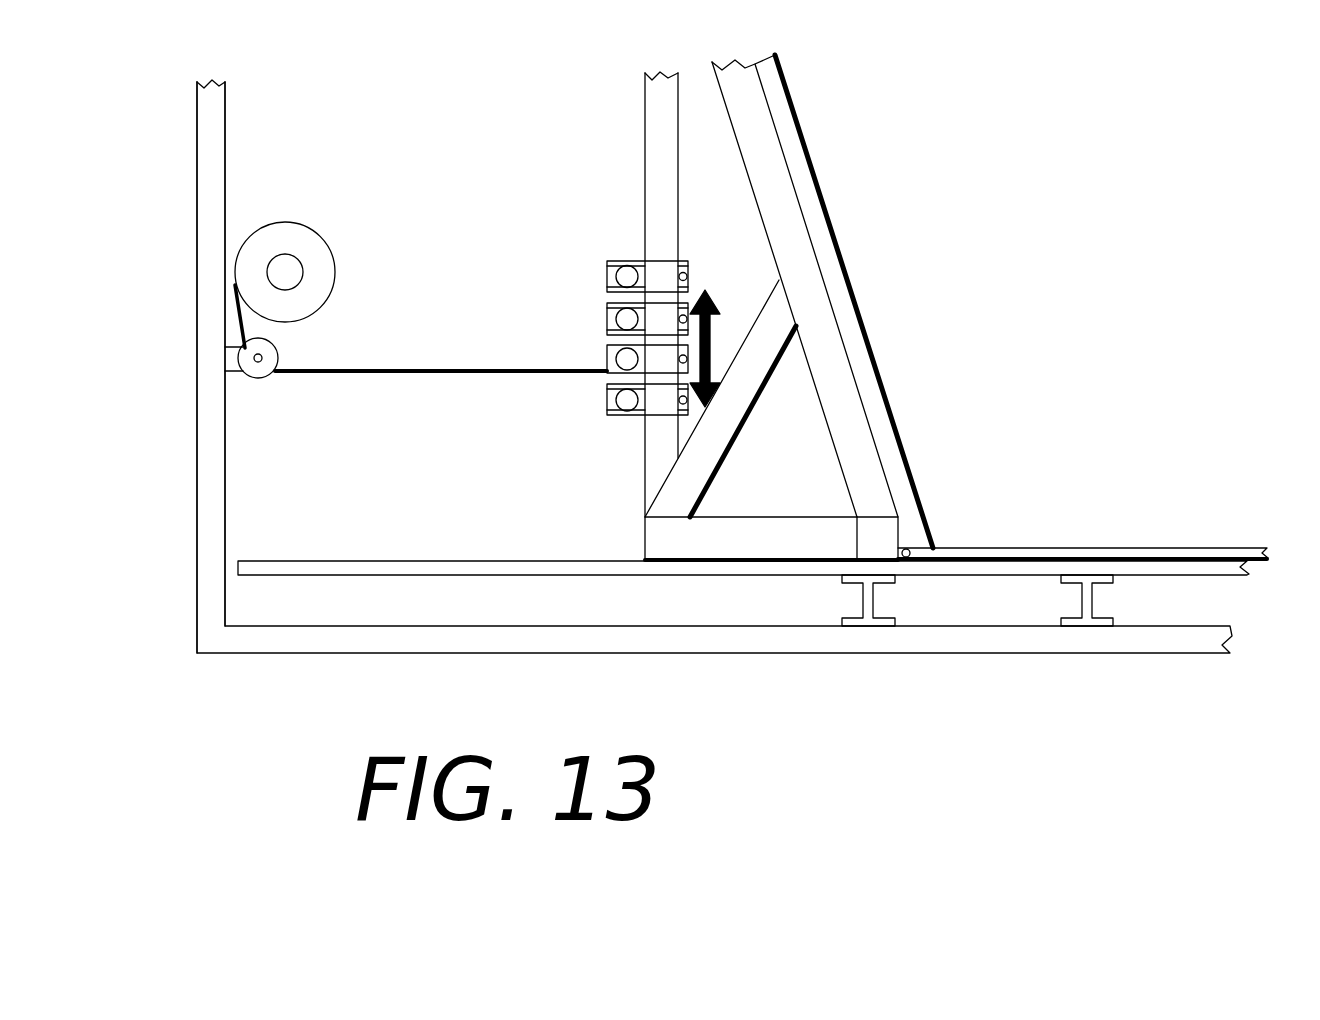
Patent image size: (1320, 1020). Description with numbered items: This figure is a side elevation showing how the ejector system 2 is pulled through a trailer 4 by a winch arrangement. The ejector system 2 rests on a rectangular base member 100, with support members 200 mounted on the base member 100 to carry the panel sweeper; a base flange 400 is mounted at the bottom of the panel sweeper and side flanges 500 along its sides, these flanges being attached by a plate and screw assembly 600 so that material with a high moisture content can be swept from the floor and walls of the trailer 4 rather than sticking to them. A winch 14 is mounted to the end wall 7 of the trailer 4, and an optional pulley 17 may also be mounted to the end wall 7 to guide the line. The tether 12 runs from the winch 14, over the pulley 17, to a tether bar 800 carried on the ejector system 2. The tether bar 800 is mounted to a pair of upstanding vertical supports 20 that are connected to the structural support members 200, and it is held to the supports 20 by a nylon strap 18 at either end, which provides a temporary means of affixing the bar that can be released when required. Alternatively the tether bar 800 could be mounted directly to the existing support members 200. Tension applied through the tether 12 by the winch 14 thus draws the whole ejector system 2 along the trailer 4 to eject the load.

The ejector system 2 is at (994, 305).
The trailer 4 is at (197, 145).
The end wall 7 is at (226, 466).
The tether 12 is at (403, 372).
The winch 14 is at (308, 230).
The pulley 17 is at (262, 378).
The nylon strap 18 is at (680, 362).
The upstanding vertical supports 20 is at (645, 163).
The base member 100 is at (762, 553).
The support members 200 is at (812, 388).
The base flange 400 is at (1070, 548).
The side flanges 500 is at (835, 233).
The plate and screw assembly 600 is at (905, 548).
The tether bar 800 is at (623, 352).